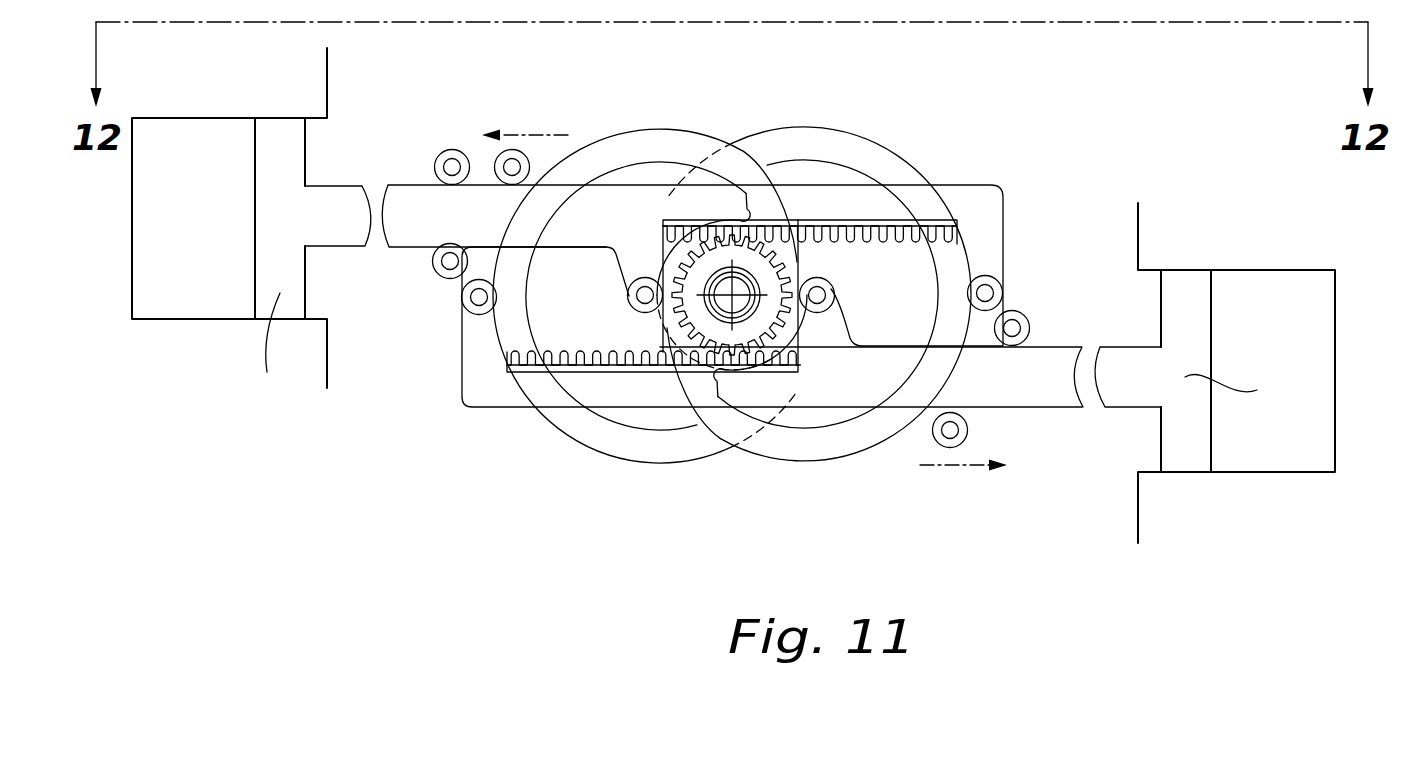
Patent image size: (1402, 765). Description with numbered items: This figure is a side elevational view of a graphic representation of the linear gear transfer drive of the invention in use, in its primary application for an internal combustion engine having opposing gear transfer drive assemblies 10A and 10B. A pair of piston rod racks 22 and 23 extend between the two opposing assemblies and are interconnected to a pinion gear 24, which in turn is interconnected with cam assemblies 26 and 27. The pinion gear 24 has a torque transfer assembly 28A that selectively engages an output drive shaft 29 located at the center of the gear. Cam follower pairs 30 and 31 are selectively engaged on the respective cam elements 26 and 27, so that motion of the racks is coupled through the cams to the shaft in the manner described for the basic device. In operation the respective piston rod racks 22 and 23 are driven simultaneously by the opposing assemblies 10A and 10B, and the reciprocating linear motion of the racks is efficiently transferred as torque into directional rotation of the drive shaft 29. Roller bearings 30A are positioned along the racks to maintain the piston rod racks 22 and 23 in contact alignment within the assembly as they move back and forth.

The gear transfer drive assembly 10A is at (1199, 356).
The gear transfer drive assembly 10B is at (271, 227).
The piston rod rack 22 is at (507, 407).
The piston rod rack 23 is at (880, 208).
The pinion gear 24 is at (767, 280).
The cam assembly 26 is at (672, 103).
The cam assembly 27 is at (875, 118).
The torque transfer assembly 28A is at (706, 327).
The output drive shaft 29 is at (740, 290).
The cam follower pair 30 is at (628, 303).
The roller bearing 30A is at (450, 149).
The cam follower pair 31 is at (994, 277).